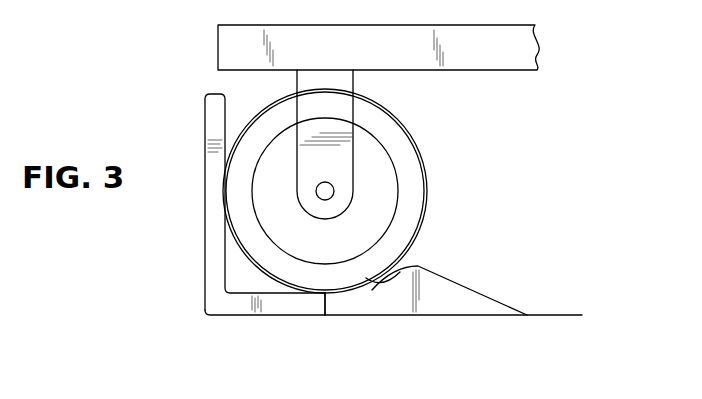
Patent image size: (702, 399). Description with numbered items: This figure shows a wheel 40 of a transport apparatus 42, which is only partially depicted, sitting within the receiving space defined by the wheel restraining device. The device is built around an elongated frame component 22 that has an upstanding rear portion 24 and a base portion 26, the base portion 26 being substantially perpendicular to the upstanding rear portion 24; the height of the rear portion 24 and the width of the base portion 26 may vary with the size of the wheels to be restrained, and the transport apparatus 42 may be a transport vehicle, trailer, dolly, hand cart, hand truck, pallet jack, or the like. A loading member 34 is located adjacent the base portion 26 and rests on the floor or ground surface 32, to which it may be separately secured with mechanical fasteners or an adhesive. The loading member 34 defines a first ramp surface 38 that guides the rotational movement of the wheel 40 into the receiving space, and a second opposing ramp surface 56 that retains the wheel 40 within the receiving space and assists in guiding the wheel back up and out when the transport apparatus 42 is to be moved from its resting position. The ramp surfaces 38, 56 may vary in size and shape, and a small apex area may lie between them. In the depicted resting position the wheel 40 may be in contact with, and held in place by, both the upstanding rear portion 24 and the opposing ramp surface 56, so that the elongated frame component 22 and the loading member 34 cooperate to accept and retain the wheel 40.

The elongated frame component 22 is at (158, 262).
The upstanding rear portion 24 is at (215, 110).
The base portion 26 is at (248, 308).
The floor or ground surface 32 is at (552, 315).
The loading member 34 is at (448, 310).
The first ramp surface 38 is at (467, 290).
The wheel 40 is at (406, 173).
The transport apparatus 42 is at (495, 57).
The second opposing ramp surface 56 is at (400, 272).